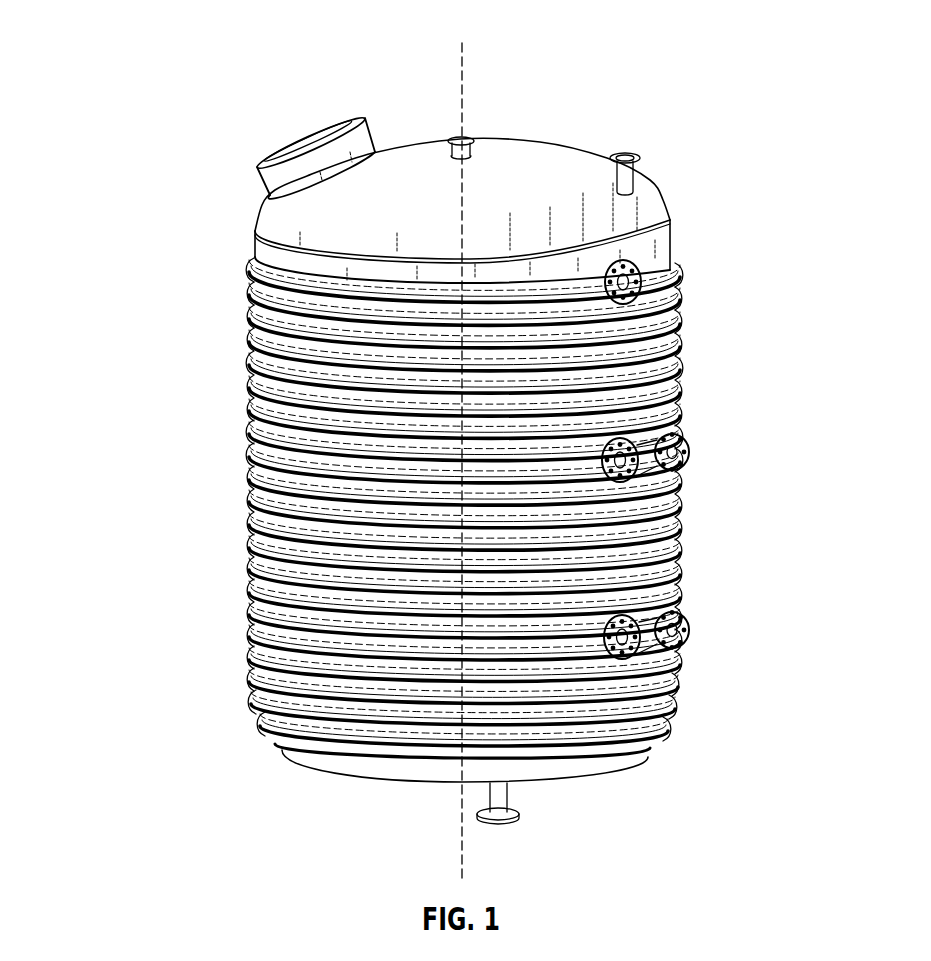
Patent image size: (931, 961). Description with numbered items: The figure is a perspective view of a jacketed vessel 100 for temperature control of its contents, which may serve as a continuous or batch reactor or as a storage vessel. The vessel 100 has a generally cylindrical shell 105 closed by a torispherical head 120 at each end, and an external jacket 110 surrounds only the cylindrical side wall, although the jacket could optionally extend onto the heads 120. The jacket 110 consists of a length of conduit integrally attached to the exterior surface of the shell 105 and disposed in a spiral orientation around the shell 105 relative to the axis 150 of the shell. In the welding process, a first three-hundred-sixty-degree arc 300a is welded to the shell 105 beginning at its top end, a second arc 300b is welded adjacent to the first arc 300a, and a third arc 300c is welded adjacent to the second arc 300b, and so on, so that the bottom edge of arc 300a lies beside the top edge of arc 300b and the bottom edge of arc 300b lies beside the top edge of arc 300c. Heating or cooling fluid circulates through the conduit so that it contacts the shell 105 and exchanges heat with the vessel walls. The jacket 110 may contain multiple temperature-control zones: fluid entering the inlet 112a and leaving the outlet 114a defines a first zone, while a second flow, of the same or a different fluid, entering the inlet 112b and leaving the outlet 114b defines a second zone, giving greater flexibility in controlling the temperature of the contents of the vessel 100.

The jacketed vessel 100 is at (206, 46).
The shell 105 is at (658, 250).
The jacket 110 is at (128, 263).
The inlet 112a is at (632, 300).
The inlet 112b is at (640, 478).
The outlet 114a is at (690, 455).
The outlet 114b is at (690, 627).
The torispherical head 120 is at (530, 160).
The axis 150 is at (463, 70).
The first 360-degree arc 300a is at (683, 274).
The second 360-degree arc 300b is at (683, 298).
The third 360-degree arc 300c is at (683, 321).